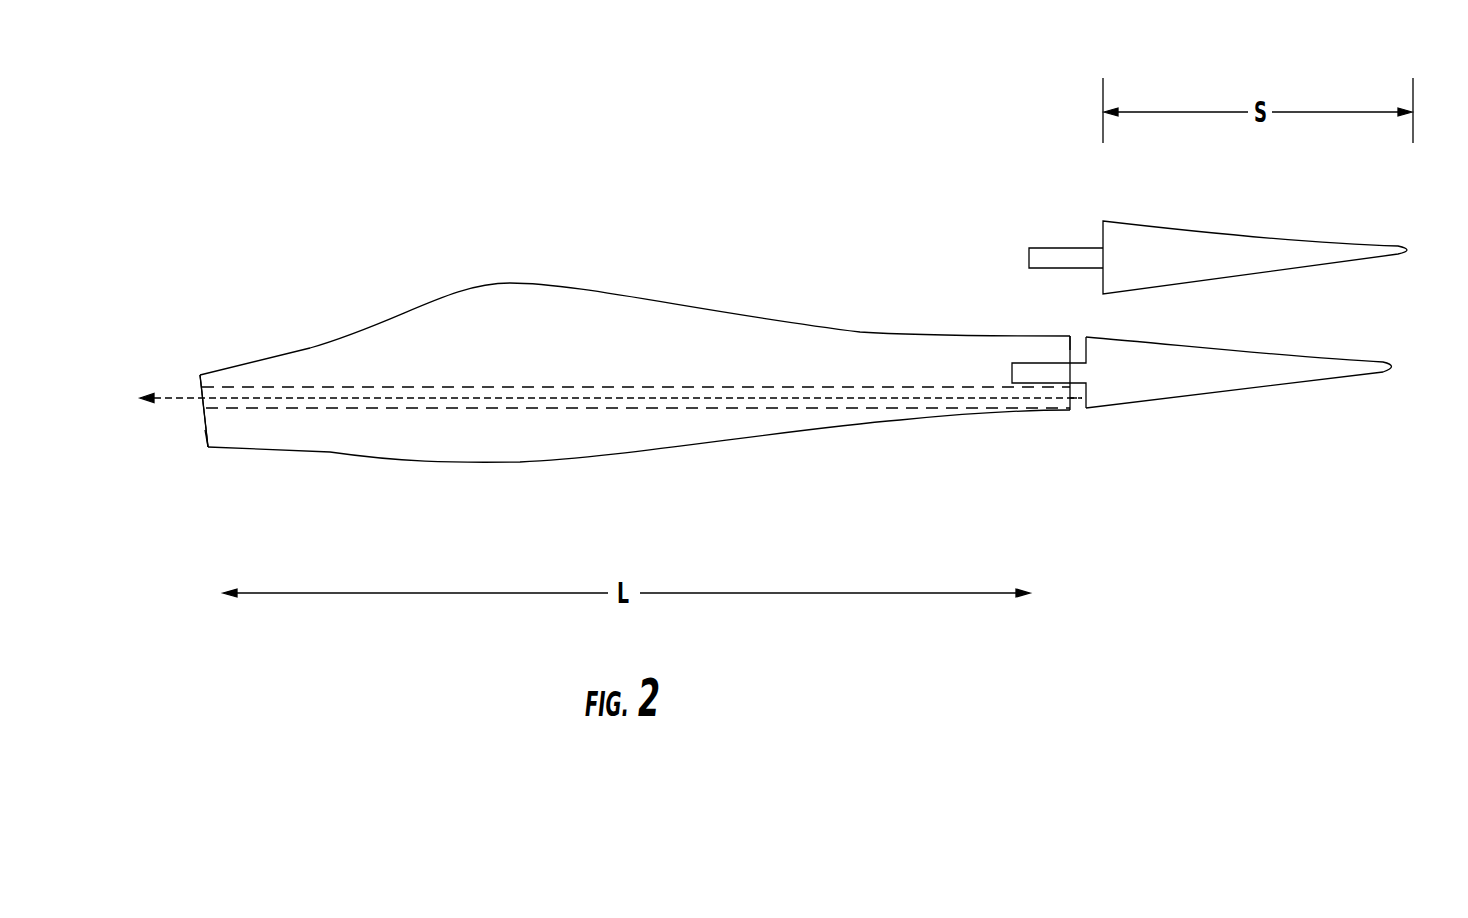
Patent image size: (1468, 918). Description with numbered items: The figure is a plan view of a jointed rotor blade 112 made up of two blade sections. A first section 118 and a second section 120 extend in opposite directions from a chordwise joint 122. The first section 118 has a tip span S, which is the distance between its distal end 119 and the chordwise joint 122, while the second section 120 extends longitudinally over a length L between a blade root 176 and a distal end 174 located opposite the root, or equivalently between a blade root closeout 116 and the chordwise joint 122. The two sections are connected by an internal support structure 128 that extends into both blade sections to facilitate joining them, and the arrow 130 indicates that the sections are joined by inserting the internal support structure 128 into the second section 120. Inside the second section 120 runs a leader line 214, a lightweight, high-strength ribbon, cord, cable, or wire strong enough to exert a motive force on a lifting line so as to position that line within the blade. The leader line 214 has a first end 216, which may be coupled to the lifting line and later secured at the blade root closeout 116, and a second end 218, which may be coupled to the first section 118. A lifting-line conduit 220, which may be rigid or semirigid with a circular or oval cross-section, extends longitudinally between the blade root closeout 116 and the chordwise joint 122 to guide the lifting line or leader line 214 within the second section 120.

The jointed rotor blade 112 is at (268, 170).
The blade root closeout 116 is at (216, 330).
The first section 118 is at (1262, 385).
The distal end 119 is at (1392, 397).
The second section 120 is at (342, 446).
The chordwise joint 122 is at (1078, 402).
The internal support structure 128 is at (1053, 252).
The arrow 130 is at (1262, 285).
The distal end 174 is at (1052, 318).
The blade root 176 is at (223, 475).
The leader line 214 is at (768, 396).
The first end 216 is at (1079, 402).
The second end 218 is at (181, 413).
The lifting-line conduit 220 is at (612, 386).